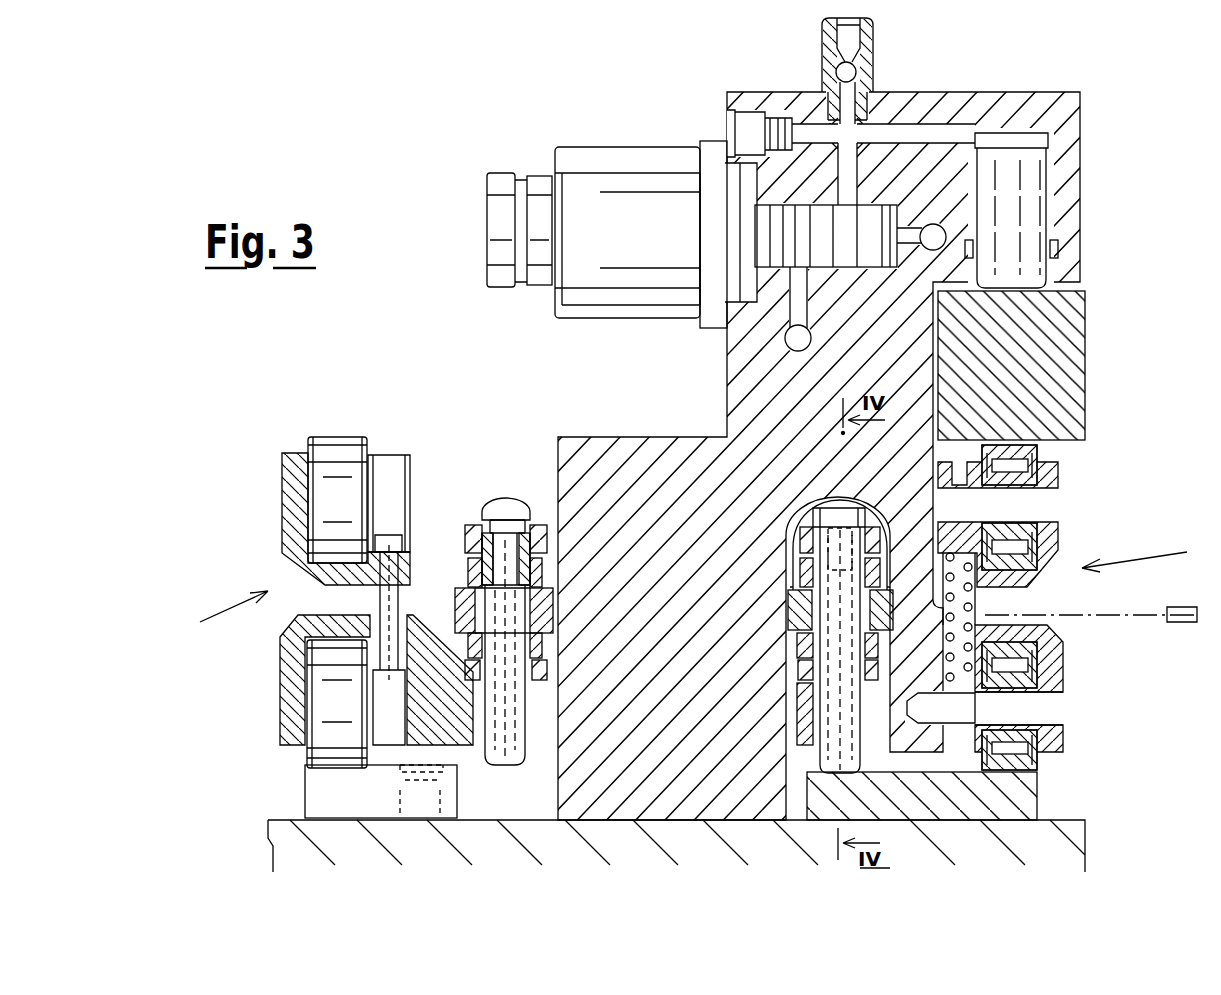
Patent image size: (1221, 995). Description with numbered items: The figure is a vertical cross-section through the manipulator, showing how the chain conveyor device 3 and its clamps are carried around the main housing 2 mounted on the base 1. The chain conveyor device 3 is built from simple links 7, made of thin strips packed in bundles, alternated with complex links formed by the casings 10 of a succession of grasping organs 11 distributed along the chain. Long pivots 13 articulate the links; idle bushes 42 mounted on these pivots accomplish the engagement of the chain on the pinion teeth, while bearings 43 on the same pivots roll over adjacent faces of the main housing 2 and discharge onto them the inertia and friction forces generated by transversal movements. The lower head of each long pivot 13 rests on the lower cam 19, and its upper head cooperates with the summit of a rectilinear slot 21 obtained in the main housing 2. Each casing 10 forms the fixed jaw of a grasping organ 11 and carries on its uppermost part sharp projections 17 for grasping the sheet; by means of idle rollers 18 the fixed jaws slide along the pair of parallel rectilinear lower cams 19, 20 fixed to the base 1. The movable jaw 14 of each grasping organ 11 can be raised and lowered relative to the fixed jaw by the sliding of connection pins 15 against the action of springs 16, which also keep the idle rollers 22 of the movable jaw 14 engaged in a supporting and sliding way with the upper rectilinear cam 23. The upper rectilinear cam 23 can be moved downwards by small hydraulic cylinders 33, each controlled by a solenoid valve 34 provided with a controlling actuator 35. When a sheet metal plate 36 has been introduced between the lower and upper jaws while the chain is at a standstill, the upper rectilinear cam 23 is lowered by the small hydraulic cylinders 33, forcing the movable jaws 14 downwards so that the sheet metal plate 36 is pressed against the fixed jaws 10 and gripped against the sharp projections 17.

The base 1 is at (290, 828).
The main housing 2 is at (625, 452).
The chain conveyor device 3 is at (503, 482).
The simple link 7 is at (470, 545).
The casing 10 is at (1058, 672).
The grasping organ 11 is at (693, 589).
The long pivot 13 is at (510, 690).
The movable jaw 14 is at (1064, 542).
The connection pin 15 is at (400, 606).
The spring 16 is at (945, 612).
The sharp projection 17 is at (1010, 616).
The idle roller 18 is at (1040, 758).
The lower cam 19 is at (1025, 792).
The lower cam 20 is at (318, 792).
The rectilinear slot 21 is at (862, 500).
The idle roller 22 is at (1060, 455).
The upper rectilinear cam 23 is at (1088, 354).
The small hydraulic cylinder 33 is at (1035, 208).
The solenoid valve 34 is at (853, 283).
The controlling actuator 35 is at (615, 166).
The sheet metal plate 36 is at (1172, 623).
The idle bush 42 is at (555, 562).
The bearing 43 is at (560, 602).